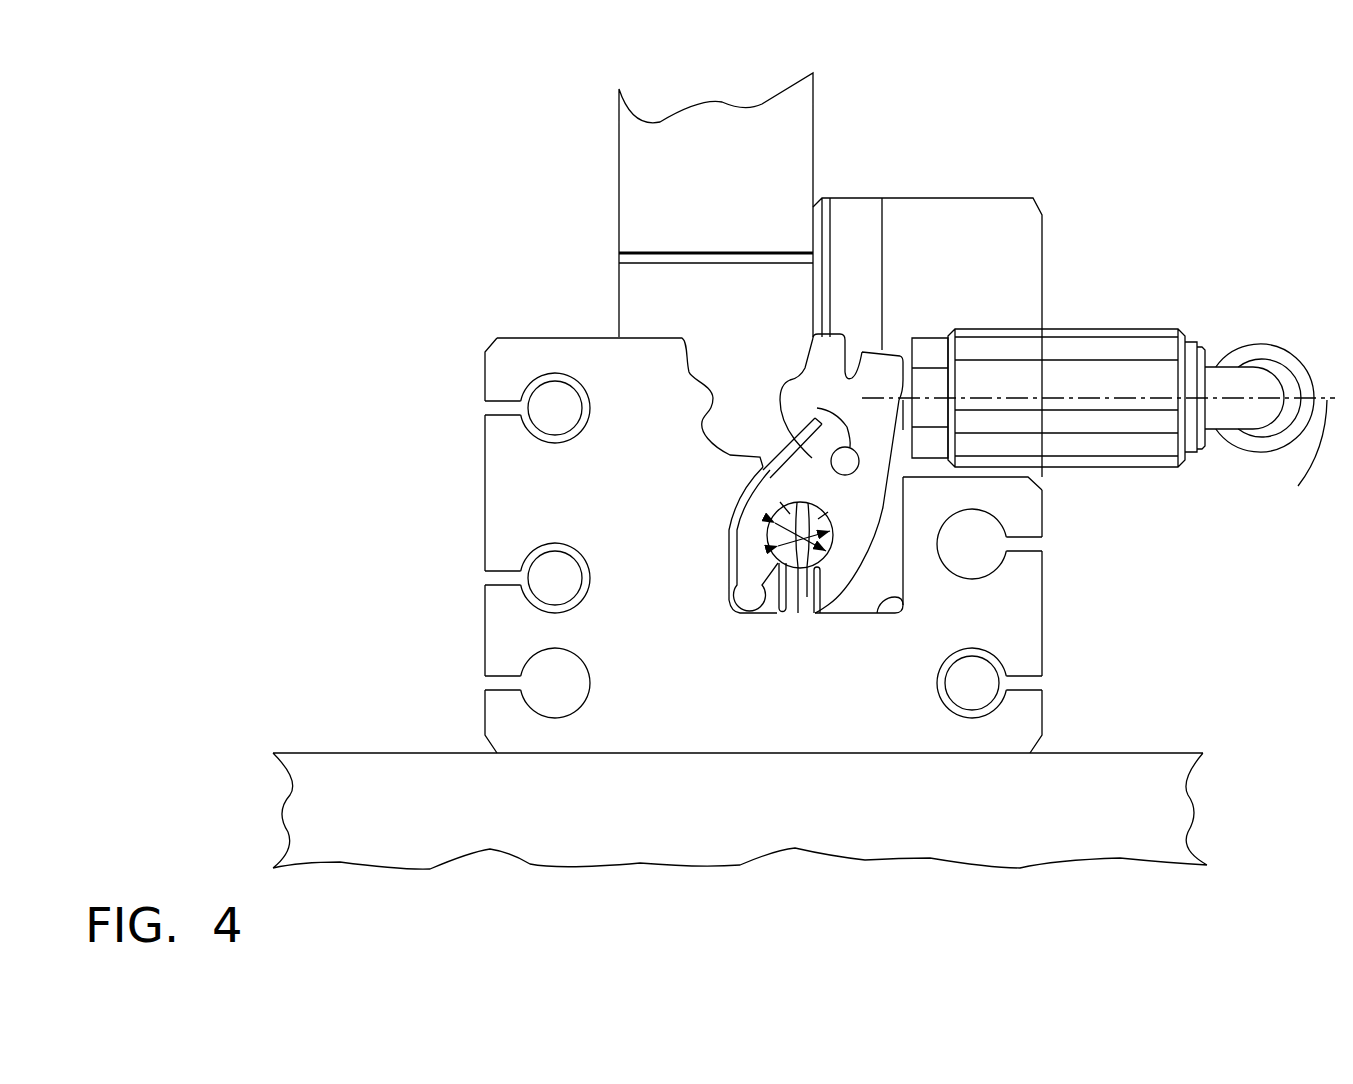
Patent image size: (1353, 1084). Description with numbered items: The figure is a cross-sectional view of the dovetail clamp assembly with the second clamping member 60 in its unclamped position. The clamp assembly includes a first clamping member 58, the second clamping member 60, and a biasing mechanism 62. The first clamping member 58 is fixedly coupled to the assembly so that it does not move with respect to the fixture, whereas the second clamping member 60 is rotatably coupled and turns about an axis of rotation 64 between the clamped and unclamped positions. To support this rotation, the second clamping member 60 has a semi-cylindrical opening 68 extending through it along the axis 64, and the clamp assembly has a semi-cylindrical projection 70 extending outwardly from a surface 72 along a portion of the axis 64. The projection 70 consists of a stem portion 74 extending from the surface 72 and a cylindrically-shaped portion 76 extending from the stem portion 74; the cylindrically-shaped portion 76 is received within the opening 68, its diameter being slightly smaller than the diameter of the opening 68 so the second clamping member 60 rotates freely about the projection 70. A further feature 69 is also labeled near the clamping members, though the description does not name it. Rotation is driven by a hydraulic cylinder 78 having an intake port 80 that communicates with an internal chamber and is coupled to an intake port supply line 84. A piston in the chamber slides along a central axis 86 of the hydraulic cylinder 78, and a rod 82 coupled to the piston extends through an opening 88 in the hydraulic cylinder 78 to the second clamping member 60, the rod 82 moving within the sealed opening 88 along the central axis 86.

The first clamping member 58 is at (648, 336).
The second clamping member 60 is at (866, 350).
The biasing mechanism 62 is at (789, 372).
The axis of rotation 64 is at (797, 614).
The semi-cylindrical opening 68 is at (732, 563).
The hook portion 69 is at (815, 408).
The semi-cylindrical projection 70 is at (840, 549).
The surface 72 is at (905, 602).
The stem portion 74 is at (807, 598).
The cylindrically-shaped portion 76 is at (767, 532).
The hydraulic cylinder 78 is at (1074, 470).
The intake port 80 is at (1206, 366).
The rod 82 is at (902, 430).
The intake port supply line 84 is at (1244, 364).
The central axis 86 is at (1298, 490).
The opening 88 is at (901, 370).